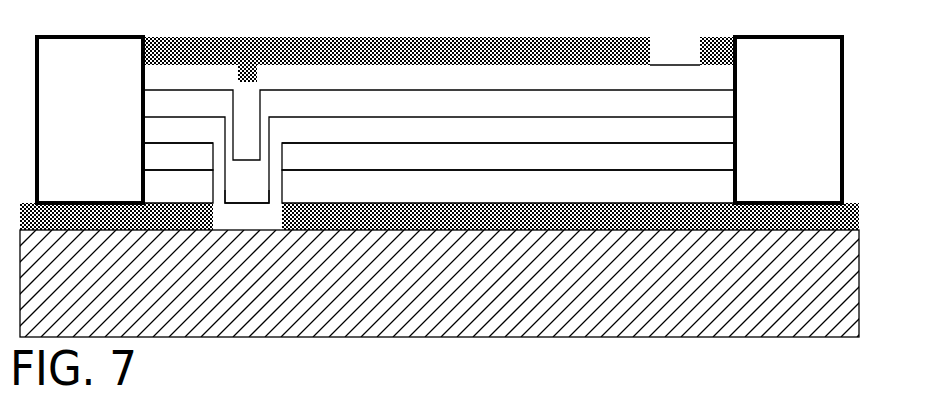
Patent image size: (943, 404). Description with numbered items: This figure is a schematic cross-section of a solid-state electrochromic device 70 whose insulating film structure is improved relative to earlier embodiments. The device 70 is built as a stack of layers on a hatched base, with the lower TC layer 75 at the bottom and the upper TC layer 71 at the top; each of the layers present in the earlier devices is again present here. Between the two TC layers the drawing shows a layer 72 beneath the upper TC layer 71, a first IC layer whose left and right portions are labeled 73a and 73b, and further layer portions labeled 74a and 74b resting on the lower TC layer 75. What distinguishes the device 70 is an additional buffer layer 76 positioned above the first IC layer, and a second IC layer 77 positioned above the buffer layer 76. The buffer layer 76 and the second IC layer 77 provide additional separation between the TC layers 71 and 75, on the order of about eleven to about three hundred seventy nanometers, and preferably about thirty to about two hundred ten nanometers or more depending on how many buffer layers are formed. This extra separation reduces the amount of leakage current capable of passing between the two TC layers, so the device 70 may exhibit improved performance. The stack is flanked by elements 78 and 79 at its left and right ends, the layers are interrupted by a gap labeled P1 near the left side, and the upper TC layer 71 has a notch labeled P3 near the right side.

The solid-state electrochromic device 70 is at (452, 364).
The upper TC layer 71 is at (439, 59).
The second layer 72 is at (439, 112).
The first IC layer portion 73a is at (178, 156).
The first IC layer portion 73b is at (508, 156).
The second lower layer left portion 74a is at (178, 186).
The second lower layer right portion 74b is at (508, 186).
The lower TC layer 75 is at (439, 216).
The buffer layer 76 is at (439, 129).
The second IC layer 77 is at (439, 146).
The left terminal electrode 78 is at (90, 120).
The right terminal electrode 79 is at (788, 120).
The first opening P1 is at (247, 198).
The third opening P3 is at (675, 45).